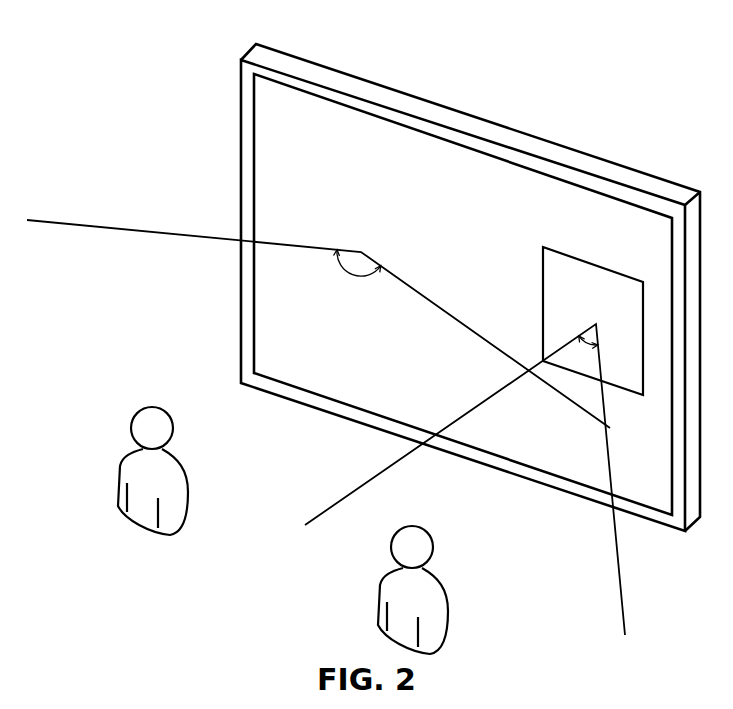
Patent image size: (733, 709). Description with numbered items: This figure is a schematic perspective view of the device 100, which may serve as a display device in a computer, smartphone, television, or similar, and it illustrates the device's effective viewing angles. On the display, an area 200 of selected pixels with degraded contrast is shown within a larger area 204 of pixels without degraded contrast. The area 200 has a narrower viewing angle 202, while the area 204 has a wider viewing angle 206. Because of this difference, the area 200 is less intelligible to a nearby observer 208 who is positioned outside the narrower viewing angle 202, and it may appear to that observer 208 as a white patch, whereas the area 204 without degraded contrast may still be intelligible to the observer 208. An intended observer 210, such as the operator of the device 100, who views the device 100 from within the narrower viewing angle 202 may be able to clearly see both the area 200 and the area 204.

The device 100 is at (597, 132).
The area of selected pixels with degraded contrast 200 is at (593, 321).
The narrower viewing angle 202 is at (473, 479).
The area of pixels without degraded contrast 204 is at (463, 294).
The wider viewing angle 206 is at (318, 324).
The nearby observer 208 is at (134, 471).
The intended observer 210 is at (394, 590).